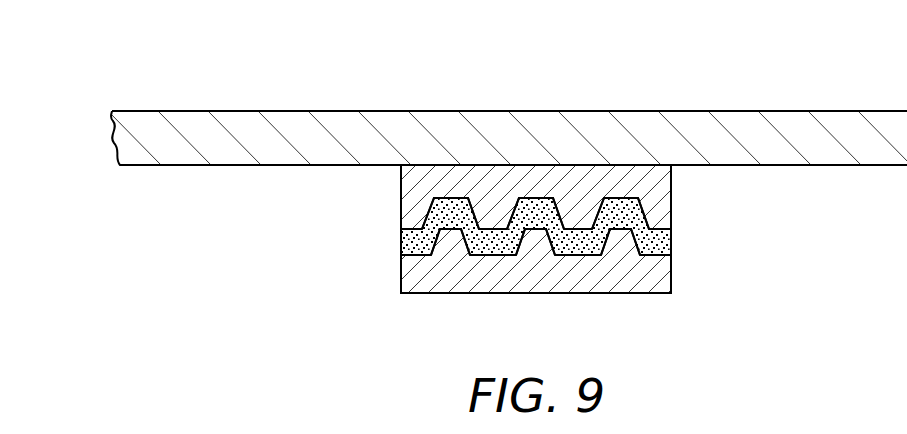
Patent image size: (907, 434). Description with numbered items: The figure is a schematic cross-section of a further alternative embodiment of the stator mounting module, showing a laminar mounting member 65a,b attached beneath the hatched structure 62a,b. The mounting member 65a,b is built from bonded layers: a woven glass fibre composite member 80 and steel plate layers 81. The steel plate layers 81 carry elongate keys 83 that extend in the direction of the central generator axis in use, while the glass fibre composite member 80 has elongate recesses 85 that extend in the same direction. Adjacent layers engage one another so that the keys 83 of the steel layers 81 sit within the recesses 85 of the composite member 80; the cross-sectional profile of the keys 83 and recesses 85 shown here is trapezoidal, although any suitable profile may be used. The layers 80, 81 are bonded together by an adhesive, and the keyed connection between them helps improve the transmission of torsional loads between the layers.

The plate / substrate 62a,b is at (834, 120).
The mounting member 65a,b is at (671, 217).
The woven glass fibre composite member 80 is at (410, 190).
The steel plate layer 81 is at (410, 272).
The elongate key 83 is at (453, 236).
The elongate recess 85 is at (455, 202).